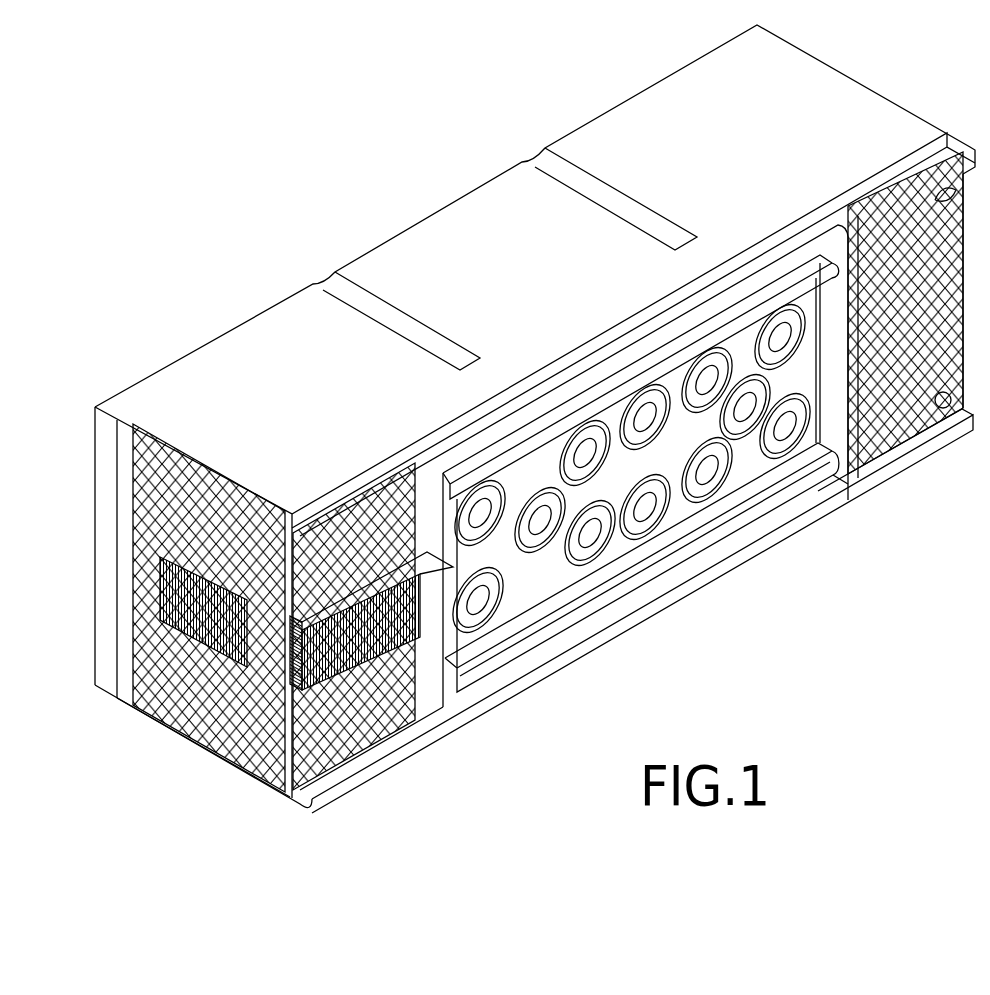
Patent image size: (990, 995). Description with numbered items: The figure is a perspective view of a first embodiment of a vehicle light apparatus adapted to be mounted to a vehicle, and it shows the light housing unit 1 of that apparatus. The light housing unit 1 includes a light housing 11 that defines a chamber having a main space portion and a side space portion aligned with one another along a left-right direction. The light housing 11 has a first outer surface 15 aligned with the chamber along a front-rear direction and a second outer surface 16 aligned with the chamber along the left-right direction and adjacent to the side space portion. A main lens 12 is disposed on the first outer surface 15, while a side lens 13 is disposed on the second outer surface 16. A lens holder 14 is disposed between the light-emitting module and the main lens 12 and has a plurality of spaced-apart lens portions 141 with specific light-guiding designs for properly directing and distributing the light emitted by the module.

The light housing unit 1 is at (408, 178).
The light housing 11 is at (372, 237).
The main lens 12 is at (727, 548).
The side lens 13 is at (188, 707).
The lens holder 14 is at (540, 590).
The lens portions 141 is at (490, 603).
The first outer surface 15 is at (818, 537).
The second outer surface 16 is at (230, 765).